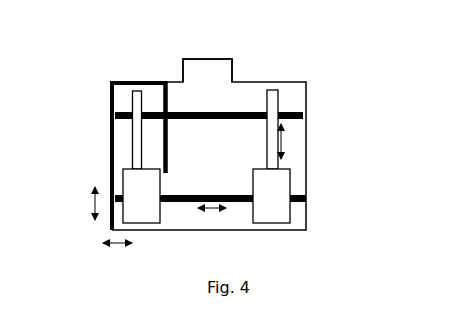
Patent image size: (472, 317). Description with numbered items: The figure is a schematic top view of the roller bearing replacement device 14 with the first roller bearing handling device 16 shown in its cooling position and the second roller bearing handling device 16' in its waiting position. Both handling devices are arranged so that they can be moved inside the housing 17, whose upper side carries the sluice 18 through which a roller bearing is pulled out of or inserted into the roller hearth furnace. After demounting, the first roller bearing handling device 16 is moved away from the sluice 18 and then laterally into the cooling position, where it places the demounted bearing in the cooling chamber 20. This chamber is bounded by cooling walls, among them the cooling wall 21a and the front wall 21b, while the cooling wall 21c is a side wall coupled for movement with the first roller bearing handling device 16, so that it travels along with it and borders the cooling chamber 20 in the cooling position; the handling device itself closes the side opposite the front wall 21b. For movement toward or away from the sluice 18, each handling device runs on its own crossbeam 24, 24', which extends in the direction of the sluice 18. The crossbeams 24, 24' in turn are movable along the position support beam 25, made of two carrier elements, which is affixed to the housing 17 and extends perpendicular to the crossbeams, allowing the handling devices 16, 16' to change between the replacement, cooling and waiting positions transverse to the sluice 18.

The roller bearing replacement device 14 is at (203, 147).
The first roller bearing handling device 16 is at (157, 219).
The second roller bearing handling device 16' is at (291, 229).
The housing 17 is at (314, 218).
The sluice 18 is at (234, 69).
The cooling chamber 20 is at (149, 100).
The cooling wall 21a is at (110, 135).
The front wall 21b is at (115, 80).
The cooling wall 21c is at (168, 102).
The crossbeam 24 is at (94, 135).
The crossbeam 24' is at (320, 129).
The position support beam 25 is at (306, 116).